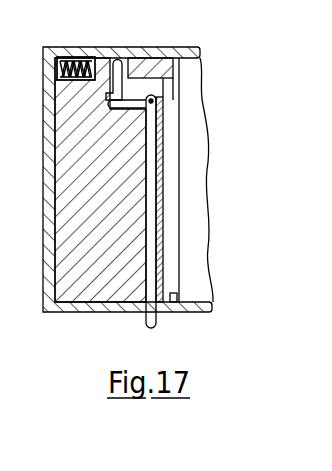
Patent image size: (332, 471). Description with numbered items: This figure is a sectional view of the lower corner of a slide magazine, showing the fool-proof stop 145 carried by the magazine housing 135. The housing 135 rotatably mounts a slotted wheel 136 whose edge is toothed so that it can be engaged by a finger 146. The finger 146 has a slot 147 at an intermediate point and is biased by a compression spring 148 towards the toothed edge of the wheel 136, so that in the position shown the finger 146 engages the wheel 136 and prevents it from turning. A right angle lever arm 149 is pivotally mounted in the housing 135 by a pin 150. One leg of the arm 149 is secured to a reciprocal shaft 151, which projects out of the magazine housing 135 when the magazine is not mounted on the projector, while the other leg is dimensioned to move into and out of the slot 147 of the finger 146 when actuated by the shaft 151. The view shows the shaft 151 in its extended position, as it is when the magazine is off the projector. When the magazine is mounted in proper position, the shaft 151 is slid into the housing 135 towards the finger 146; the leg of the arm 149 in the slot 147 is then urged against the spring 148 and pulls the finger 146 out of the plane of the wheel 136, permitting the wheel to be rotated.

The magazine housing 135 is at (192, 48).
The slotted wheel 136 is at (205, 188).
The fool-proof stop 145 is at (193, 125).
The finger 146 is at (134, 47).
The slot 147 is at (112, 97).
The compression spring 148 is at (73, 57).
The right angle lever arm 149 is at (170, 89).
The pin 150 is at (101, 60).
The reciprocal shaft 151 is at (156, 324).